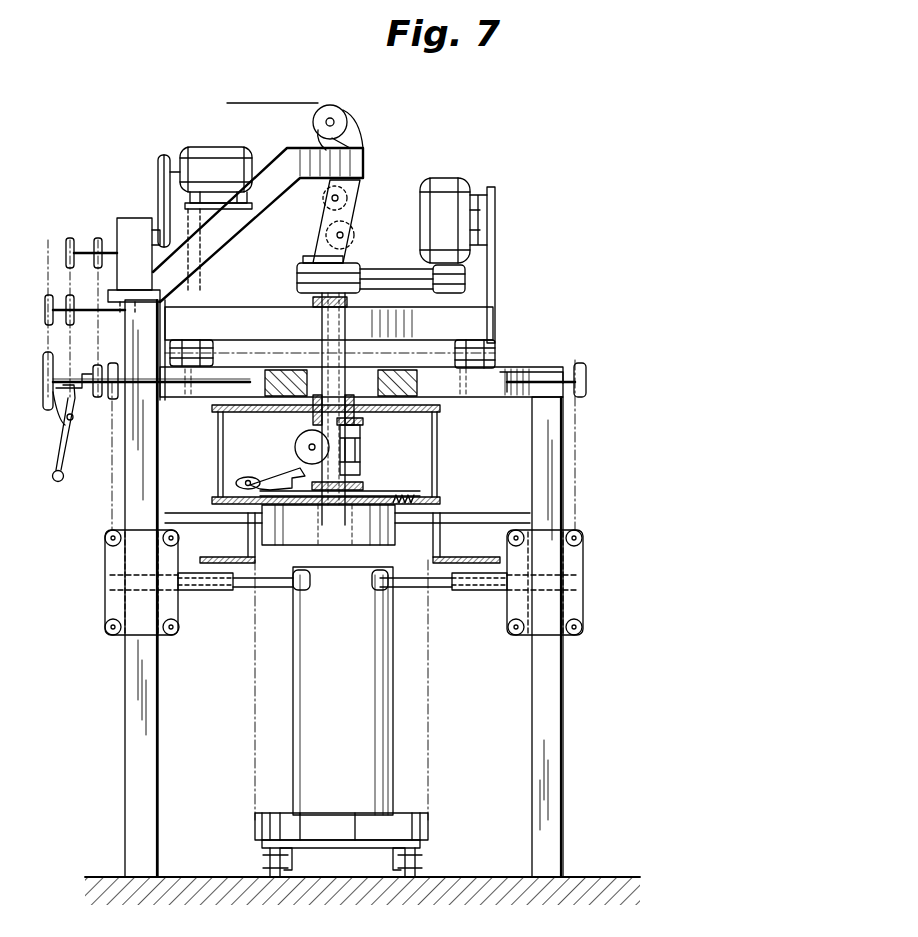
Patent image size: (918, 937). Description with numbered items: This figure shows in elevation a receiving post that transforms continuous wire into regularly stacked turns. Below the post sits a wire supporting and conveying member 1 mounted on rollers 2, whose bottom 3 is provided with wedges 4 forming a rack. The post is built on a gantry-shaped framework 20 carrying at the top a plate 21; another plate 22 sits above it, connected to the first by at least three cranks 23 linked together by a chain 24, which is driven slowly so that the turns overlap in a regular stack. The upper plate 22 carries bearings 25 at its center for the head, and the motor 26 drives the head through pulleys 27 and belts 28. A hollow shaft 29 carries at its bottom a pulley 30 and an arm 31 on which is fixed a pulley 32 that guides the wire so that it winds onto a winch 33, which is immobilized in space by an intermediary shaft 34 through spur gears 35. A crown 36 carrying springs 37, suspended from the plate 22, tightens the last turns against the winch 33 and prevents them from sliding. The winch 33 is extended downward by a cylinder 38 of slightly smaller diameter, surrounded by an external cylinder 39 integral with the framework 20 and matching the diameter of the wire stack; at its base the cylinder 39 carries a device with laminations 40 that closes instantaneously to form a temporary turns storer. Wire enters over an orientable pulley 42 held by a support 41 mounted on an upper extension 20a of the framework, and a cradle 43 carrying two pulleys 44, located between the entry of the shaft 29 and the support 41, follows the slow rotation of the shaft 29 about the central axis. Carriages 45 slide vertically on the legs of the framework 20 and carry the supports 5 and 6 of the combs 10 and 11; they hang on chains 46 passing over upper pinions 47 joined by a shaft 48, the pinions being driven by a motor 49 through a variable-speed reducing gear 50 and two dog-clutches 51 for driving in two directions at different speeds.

The wire supporting and conveying member 1 is at (377, 718).
The rollers 2 is at (262, 857).
The bottom 3 is at (330, 848).
The wedges 4 is at (405, 812).
The support 5 is at (210, 592).
The support 6 is at (460, 592).
The comb 10 is at (246, 587).
The comb 11 is at (418, 587).
The framework 20 is at (150, 752).
The upper extension of the framework 20a is at (297, 157).
The plate 21 is at (462, 396).
The plate 22 is at (230, 318).
The cranks 23 is at (192, 340).
The chain 24 is at (270, 351).
The bearings 25 is at (313, 302).
The motor 26 is at (451, 174).
The pulleys 27 is at (300, 266).
The belts 28 is at (405, 282).
The hollow shaft 29 is at (310, 256).
The pulley 30 is at (306, 442).
The arm 31 is at (282, 482).
The pulley 32 is at (247, 481).
The winch 33 is at (390, 493).
The intermediary shaft 34 is at (360, 453).
The spur gears 35 is at (364, 423).
The crown 36 is at (420, 500).
The springs 37 is at (440, 493).
The cylinder 38 is at (388, 532).
The cylinder 39 is at (437, 532).
The laminations 40 is at (220, 558).
The support 41 is at (352, 140).
The orientable pulley 42 is at (330, 105).
The cradle 43 is at (350, 199).
The pulleys 44 is at (355, 236).
The carriages 45 is at (108, 604).
The chains 46 is at (112, 478).
The upper pinions 47 is at (104, 400).
The shaft 48 is at (186, 390).
The motor 49 is at (212, 152).
The variable-speed reducing gear 50 is at (135, 225).
The dog-clutches 51 is at (63, 410).